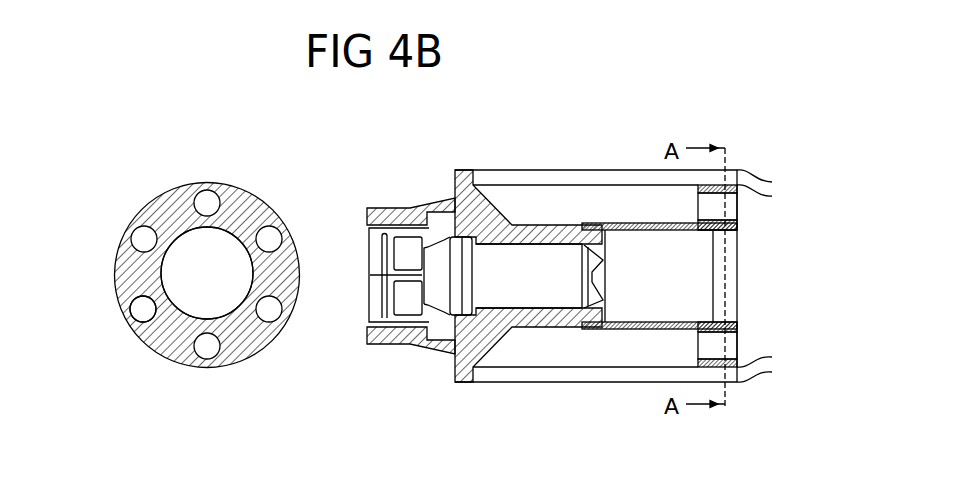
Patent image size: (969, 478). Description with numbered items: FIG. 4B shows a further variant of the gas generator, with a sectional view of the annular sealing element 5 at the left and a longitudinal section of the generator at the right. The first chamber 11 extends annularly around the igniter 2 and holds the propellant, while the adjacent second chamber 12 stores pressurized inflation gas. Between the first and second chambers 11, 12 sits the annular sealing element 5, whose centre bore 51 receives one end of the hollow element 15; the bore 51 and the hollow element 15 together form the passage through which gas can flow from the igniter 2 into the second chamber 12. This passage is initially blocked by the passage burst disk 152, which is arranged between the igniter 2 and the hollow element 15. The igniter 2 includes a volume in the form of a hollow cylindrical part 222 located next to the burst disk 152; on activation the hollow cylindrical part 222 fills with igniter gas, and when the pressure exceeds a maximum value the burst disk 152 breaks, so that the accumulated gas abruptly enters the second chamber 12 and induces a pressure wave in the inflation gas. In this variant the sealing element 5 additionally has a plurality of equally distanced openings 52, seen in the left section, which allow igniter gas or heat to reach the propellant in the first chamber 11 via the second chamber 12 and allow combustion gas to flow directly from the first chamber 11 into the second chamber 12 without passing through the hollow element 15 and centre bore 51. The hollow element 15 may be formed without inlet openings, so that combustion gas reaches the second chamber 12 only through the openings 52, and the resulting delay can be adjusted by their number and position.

The igniter 2 is at (497, 290).
The hollow cylindrical part 222 is at (535, 292).
The sealing element 5 is at (243, 340).
The centre bore 51 is at (217, 252).
The openings 52 is at (143, 307).
The first chamber 11 is at (593, 353).
The second chamber 12 is at (768, 340).
The hollow element 15 is at (682, 304).
The passage burst disk 152 is at (586, 240).